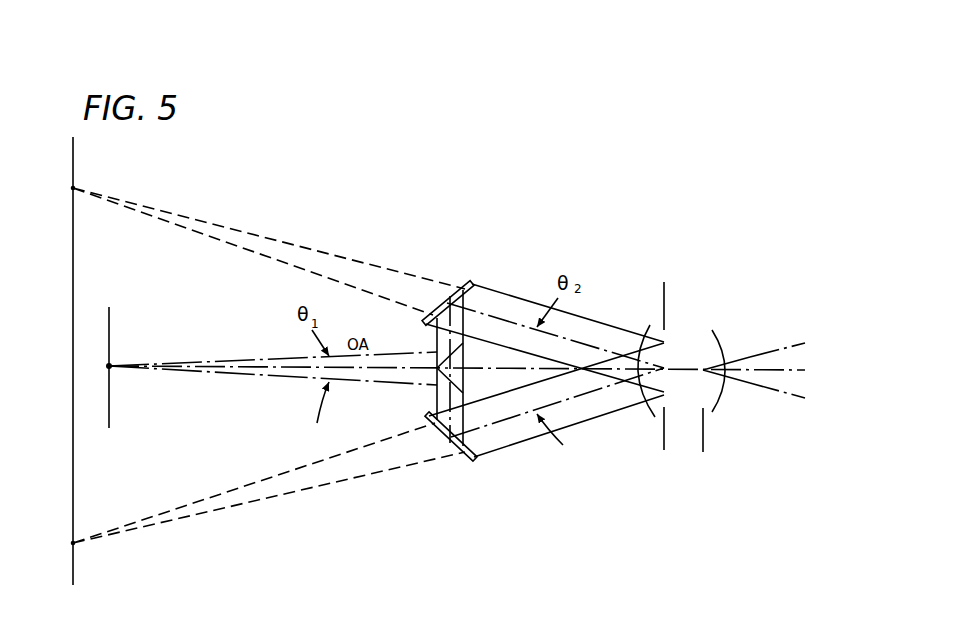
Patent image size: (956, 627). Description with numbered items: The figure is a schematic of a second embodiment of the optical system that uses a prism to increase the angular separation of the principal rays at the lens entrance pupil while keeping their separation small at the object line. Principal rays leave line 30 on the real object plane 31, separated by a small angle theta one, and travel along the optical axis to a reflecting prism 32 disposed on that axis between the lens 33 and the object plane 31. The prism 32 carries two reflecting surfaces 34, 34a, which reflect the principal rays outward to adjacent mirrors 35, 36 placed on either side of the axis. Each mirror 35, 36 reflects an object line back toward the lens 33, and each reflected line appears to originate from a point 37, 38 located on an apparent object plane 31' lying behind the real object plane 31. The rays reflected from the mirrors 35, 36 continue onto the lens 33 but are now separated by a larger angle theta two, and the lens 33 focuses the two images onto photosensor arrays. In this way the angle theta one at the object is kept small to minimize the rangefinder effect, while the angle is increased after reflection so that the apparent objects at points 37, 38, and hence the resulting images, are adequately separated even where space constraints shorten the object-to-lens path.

The line 30 is at (109, 366).
The object plane 31 is at (130, 367).
The apparent object plane 31' is at (93, 361).
The reflecting prism 32 is at (463, 367).
The lens 33 is at (693, 342).
The reflecting surface 34 is at (427, 342).
The reflecting surface 34a is at (427, 393).
The mirror 35 is at (464, 279).
The mirror 36 is at (461, 460).
The point 37 is at (73, 188).
The point 38 is at (73, 543).